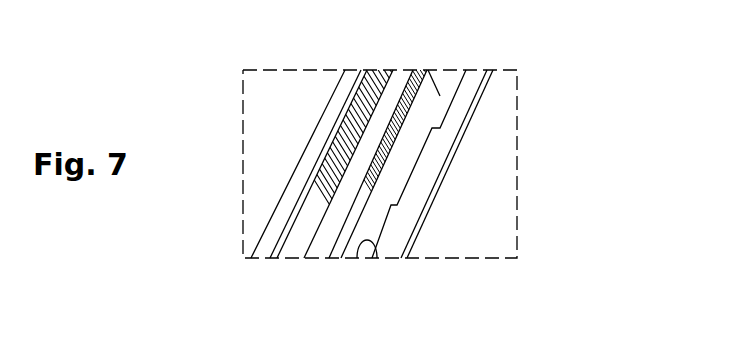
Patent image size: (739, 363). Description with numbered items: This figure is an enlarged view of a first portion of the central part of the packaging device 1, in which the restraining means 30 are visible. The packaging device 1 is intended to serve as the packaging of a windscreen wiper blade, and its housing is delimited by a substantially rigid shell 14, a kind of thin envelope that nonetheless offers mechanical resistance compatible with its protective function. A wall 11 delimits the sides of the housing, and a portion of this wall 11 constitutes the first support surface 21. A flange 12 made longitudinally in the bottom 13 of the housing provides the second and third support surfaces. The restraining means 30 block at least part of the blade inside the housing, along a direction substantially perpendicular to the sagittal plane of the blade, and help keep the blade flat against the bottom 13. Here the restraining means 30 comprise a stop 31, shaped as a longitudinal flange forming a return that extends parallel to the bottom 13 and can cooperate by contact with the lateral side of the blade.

The packaging device 1 is at (472, 199).
The wall 11 is at (460, 83).
The flange 12 is at (386, 93).
The bottom 13 is at (412, 68).
The shell 14 is at (468, 118).
The first support surface 21 is at (386, 223).
The restraining means 30 is at (396, 190).
The stop 31 is at (398, 130).